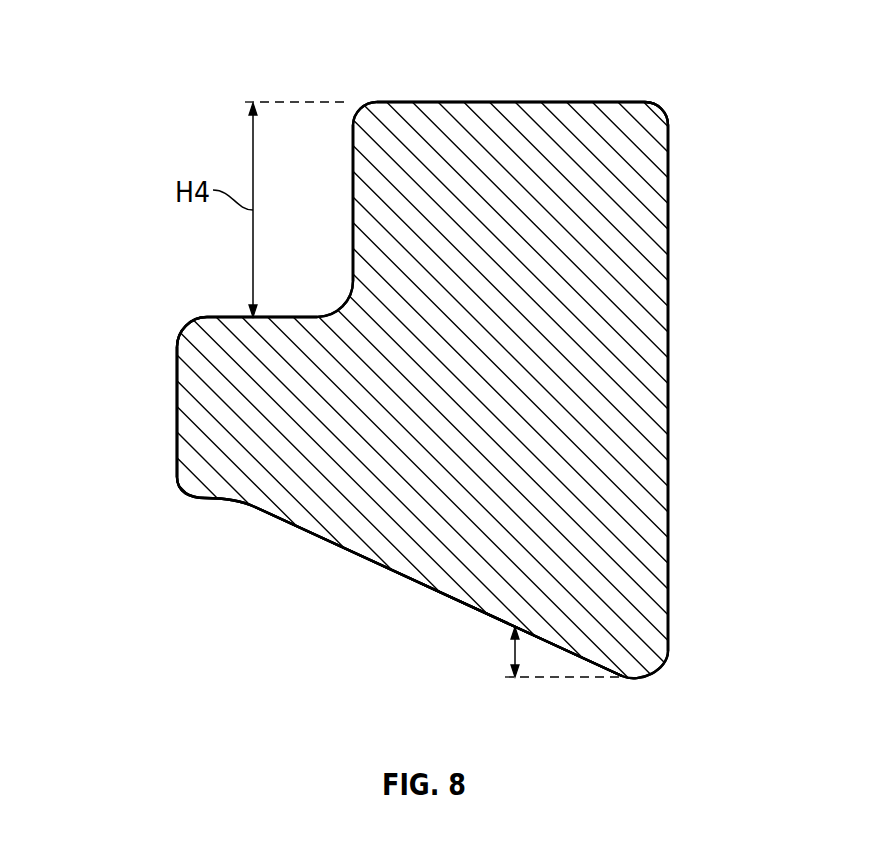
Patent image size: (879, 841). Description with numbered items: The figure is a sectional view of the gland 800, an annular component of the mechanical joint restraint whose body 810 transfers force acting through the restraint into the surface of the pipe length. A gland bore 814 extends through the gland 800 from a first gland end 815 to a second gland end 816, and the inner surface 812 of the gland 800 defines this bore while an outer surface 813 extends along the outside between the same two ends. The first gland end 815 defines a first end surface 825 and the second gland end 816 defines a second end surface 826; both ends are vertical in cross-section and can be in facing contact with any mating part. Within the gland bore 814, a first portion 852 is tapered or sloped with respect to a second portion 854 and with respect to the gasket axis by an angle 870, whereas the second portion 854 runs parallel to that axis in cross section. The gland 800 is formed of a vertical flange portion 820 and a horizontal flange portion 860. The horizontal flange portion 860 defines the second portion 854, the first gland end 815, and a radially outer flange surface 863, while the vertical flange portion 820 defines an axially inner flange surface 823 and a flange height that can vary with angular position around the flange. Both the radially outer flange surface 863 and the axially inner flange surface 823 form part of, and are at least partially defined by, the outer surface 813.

The gland 800 is at (117, 58).
The body 810 is at (540, 470).
The inner surface 812 is at (350, 552).
The outer surface 813 is at (587, 102).
The gland bore 814 is at (420, 582).
The first gland end 815 is at (102, 412).
The second gland end 816 is at (741, 388).
The vertical flange portion 820 is at (628, 172).
The axially inner flange surface 823 is at (353, 203).
The first end surface 825 is at (177, 410).
The second end surface 826 is at (667, 265).
The first portion 852 is at (489, 614).
The second portion 854 is at (215, 502).
The horizontal flange portion 860 is at (210, 425).
The radially outer flange surface 863 is at (218, 316).
The angle 870 is at (510, 651).